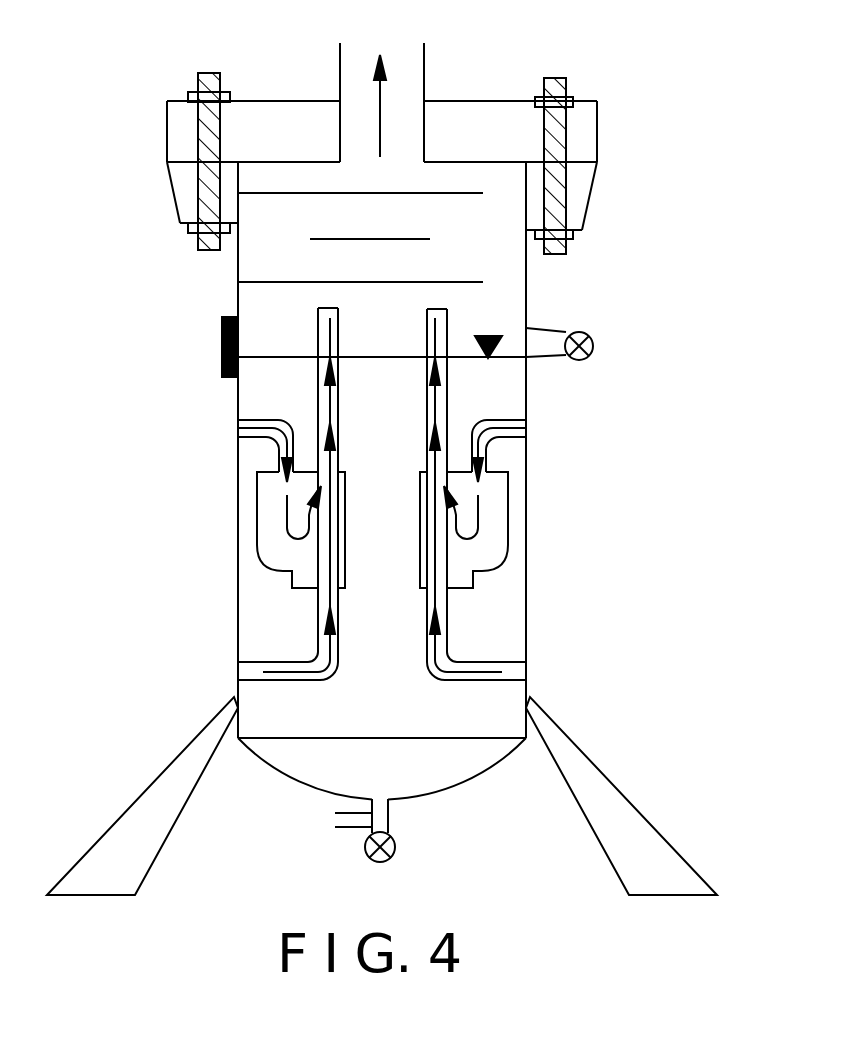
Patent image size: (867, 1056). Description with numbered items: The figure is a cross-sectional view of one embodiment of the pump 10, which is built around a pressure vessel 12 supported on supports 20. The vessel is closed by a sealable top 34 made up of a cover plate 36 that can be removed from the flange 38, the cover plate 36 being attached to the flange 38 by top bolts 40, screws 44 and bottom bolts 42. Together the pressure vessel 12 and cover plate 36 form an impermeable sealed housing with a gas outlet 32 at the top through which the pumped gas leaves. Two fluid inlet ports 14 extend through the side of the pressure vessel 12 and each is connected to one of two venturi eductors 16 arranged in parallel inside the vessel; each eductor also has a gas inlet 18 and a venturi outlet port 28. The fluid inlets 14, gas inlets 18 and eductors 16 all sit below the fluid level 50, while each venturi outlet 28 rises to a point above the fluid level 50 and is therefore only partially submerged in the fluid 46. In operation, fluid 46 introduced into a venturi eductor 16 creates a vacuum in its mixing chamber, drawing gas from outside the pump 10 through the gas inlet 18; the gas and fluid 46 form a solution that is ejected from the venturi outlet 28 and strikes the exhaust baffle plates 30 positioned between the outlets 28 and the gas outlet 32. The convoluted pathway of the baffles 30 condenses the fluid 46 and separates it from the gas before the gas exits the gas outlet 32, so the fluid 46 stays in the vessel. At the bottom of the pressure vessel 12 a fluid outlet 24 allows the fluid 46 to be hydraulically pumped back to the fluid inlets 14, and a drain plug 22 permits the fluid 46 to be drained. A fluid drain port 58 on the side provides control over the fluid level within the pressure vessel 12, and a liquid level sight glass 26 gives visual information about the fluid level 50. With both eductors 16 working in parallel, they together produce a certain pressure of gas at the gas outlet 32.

The pump 10 is at (663, 172).
The pressure vessel 12 is at (238, 570).
The fluid inlet port 14 is at (238, 425).
The venturi eductor 16 is at (257, 510).
The gas inlet 18 is at (238, 670).
The supports 20 is at (142, 795).
The drain plug 22 is at (385, 863).
The fluid outlet 24 is at (335, 822).
The liquid level sight glass 26 is at (222, 330).
The venturi outlet port 28 is at (442, 310).
The baffle plate 30 is at (400, 285).
The gas outlet 32 is at (413, 68).
The sealable top 34 is at (377, 138).
The cover plate 36 is at (597, 108).
The flange 38 is at (585, 195).
The top bolts 40 is at (575, 100).
The bottom bolts 42 is at (573, 234).
The screws 44 is at (555, 76).
The fluid 46 is at (365, 630).
The fluid level 50 is at (480, 336).
The fluid drain port 58 is at (593, 340).